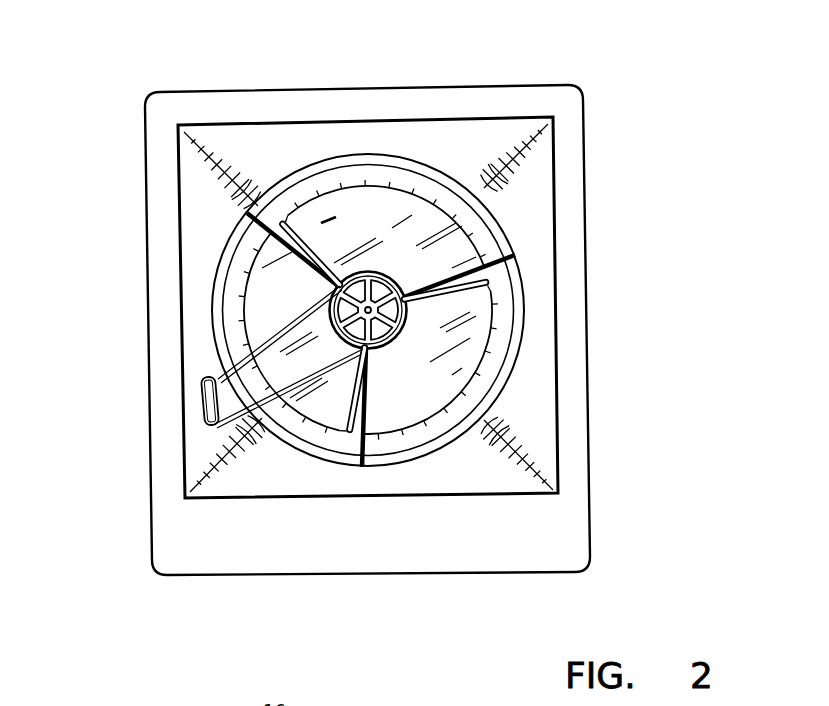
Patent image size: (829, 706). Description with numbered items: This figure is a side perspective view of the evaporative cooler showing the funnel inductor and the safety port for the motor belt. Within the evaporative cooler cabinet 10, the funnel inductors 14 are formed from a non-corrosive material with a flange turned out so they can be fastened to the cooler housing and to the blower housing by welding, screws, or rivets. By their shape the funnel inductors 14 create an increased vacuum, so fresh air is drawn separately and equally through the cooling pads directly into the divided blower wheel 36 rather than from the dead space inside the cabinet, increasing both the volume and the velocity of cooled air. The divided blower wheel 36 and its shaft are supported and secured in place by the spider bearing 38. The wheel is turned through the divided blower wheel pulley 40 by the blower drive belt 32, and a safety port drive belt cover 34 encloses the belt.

The evaporative cooler cabinet 10 is at (145, 210).
The funnel inductor 14 is at (213, 208).
The blower drive belt 32 is at (215, 424).
The safety port drive belt cover 34 is at (203, 393).
The divided blower wheel 36 is at (370, 224).
The spider bearing 38 is at (480, 262).
The divided blower wheel pulley 40 is at (412, 300).